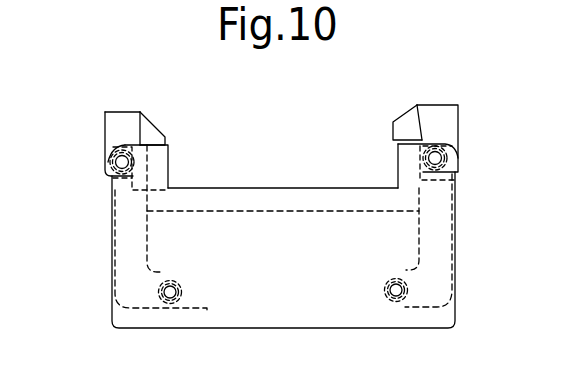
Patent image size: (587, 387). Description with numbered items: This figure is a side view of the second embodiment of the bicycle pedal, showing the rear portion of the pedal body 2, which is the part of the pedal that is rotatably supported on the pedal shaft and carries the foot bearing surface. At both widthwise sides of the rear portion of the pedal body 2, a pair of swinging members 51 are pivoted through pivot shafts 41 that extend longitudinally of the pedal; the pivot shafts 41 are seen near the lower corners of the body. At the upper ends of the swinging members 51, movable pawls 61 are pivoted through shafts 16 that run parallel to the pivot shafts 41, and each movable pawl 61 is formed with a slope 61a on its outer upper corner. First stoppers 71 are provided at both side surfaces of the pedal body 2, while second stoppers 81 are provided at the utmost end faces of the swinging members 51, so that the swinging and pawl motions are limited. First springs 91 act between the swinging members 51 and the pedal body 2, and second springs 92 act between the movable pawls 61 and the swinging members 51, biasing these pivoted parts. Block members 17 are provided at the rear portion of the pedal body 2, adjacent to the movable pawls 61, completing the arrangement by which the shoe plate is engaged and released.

The pedal body 2 is at (283, 188).
The shaft 16 is at (120, 162).
The block member 17 is at (160, 160).
The pivot shaft 41 is at (170, 298).
The swinging member 51 is at (118, 243).
The movable pawl 61 is at (122, 111).
The slope 61a is at (158, 123).
The first stopper 71 is at (147, 207).
The second stopper 81 is at (140, 128).
The first spring 91 is at (196, 308).
The second spring 92 is at (113, 190).